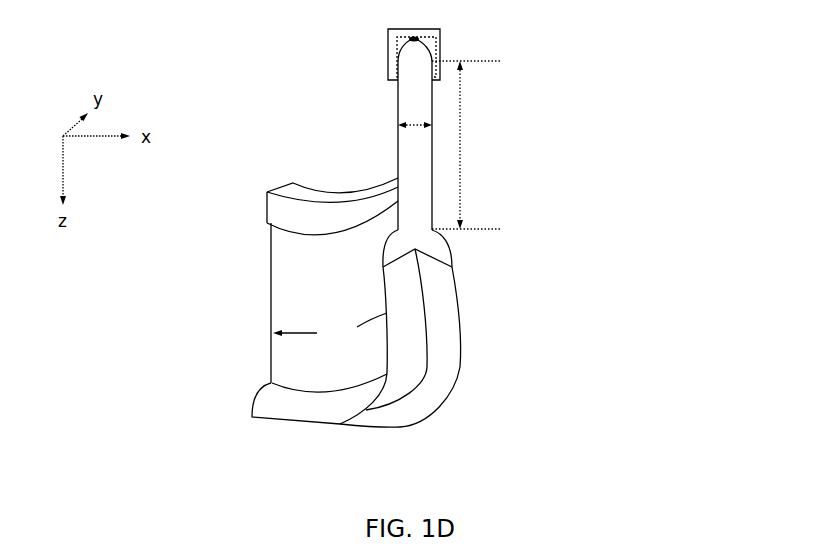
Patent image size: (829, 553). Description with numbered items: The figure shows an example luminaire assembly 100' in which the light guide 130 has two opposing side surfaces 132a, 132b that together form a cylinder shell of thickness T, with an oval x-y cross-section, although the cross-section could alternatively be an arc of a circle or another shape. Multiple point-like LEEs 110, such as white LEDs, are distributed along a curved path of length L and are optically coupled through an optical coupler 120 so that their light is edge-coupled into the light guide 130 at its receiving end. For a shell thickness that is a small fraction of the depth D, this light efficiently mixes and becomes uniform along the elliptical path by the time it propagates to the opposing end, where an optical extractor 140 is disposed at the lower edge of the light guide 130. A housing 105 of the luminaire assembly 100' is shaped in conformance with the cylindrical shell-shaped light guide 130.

The luminaire assembly 100' is at (451, 228).
The housing 105 is at (440, 43).
The LEEs 110 is at (412, 36).
The optical coupler 120 is at (408, 50).
The light guide 130 is at (283, 278).
The side surface 132a is at (232, 327).
The side surface 132b is at (478, 142).
The optical extractor 140 is at (277, 412).